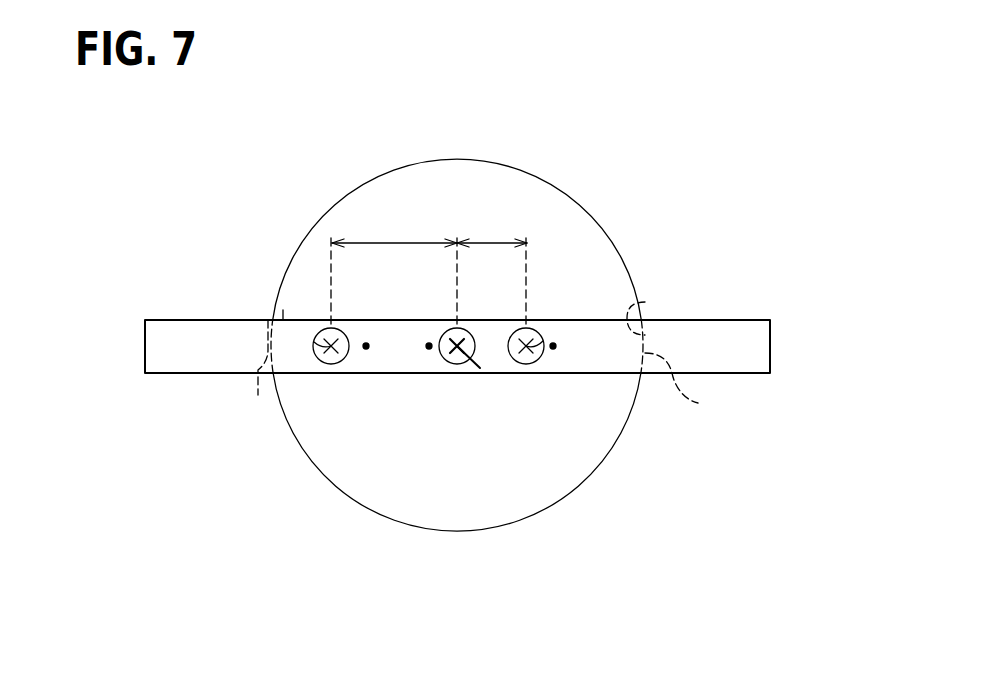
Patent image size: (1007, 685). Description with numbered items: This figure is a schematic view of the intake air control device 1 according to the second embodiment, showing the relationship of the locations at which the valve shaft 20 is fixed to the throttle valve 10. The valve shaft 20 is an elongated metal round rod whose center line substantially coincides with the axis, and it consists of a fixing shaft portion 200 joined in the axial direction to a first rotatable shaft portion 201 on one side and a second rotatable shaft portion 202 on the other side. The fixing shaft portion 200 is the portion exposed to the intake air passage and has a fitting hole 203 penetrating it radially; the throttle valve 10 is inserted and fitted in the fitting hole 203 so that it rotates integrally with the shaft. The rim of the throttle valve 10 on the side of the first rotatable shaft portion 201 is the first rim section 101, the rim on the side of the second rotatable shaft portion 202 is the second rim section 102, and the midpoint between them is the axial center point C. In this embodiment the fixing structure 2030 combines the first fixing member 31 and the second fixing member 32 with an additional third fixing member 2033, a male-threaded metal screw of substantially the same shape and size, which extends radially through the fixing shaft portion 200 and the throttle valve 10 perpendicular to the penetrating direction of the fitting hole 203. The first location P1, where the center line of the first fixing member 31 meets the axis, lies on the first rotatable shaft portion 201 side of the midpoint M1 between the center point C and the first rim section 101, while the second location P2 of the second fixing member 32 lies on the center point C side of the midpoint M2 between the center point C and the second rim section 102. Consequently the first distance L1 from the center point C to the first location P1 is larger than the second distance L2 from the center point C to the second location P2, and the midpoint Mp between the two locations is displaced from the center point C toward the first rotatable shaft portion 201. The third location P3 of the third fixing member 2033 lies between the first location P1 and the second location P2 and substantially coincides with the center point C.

The intake air control device 1 is at (302, 183).
The throttle valve 10 is at (545, 178).
The valve shaft 20 is at (283, 310).
The fixing shaft portion 200 is at (412, 354).
The first rotatable shaft portion 201 is at (152, 343).
The second rotatable shaft portion 202 is at (768, 348).
The fitting hole 203 is at (636, 303).
The first rim section 101 is at (258, 395).
The second rim section 102 is at (690, 387).
The fixing structure 2030 is at (402, 477).
The first fixing member 31 is at (322, 362).
The second fixing member 32 is at (526, 364).
The third fixing member 2033 is at (447, 361).
The first location P1 is at (314, 342).
The second location P2 is at (543, 341).
The third location P3 is at (480, 368).
The axial center point C is at (490, 479).
The midpoint between center point and first rim section M1 is at (364, 350).
The midpoint between center point and second rim section M2 is at (554, 349).
The midpoint between first location and second location Mp is at (428, 349).
The first distance L1 is at (394, 271).
The second distance L2 is at (492, 271).